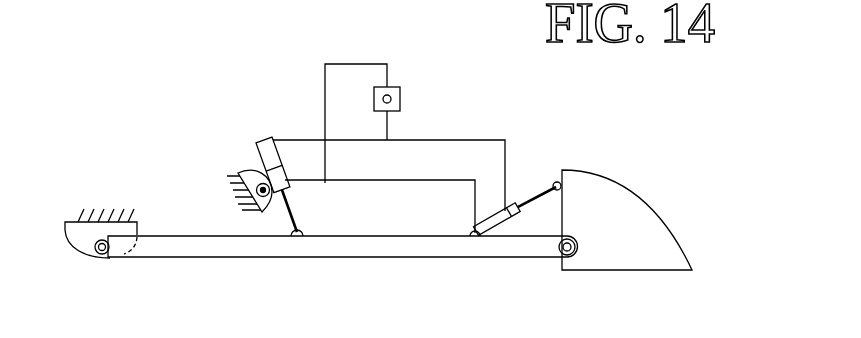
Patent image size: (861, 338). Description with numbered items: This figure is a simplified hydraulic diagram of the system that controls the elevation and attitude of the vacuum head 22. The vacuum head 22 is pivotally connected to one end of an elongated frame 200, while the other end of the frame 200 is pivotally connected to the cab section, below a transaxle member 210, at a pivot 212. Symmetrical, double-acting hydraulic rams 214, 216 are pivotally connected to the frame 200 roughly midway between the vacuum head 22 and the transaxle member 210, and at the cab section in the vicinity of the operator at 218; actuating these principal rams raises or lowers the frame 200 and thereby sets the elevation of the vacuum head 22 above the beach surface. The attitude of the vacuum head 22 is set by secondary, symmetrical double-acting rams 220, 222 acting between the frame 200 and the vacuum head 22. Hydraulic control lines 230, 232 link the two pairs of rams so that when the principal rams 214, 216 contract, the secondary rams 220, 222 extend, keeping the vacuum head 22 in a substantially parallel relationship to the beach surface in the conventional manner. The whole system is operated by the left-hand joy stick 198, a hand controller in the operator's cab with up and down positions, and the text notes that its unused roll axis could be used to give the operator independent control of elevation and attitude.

The vacuum head 22 is at (630, 200).
The left-hand joy stick 198 is at (400, 100).
The elongated frame 200 is at (238, 258).
The transaxle member 210 is at (63, 236).
The pivot 212 is at (108, 258).
The double-acting hydraulic ram 214 is at (230, 168).
The double-acting hydraulic ram 216 is at (256, 144).
The ram connection at cab section 218 is at (273, 190).
The secondary ram 220 is at (559, 173).
The secondary ram 222 is at (504, 210).
The hydraulic control line 230 is at (360, 64).
The hydraulic control line 232 is at (472, 140).